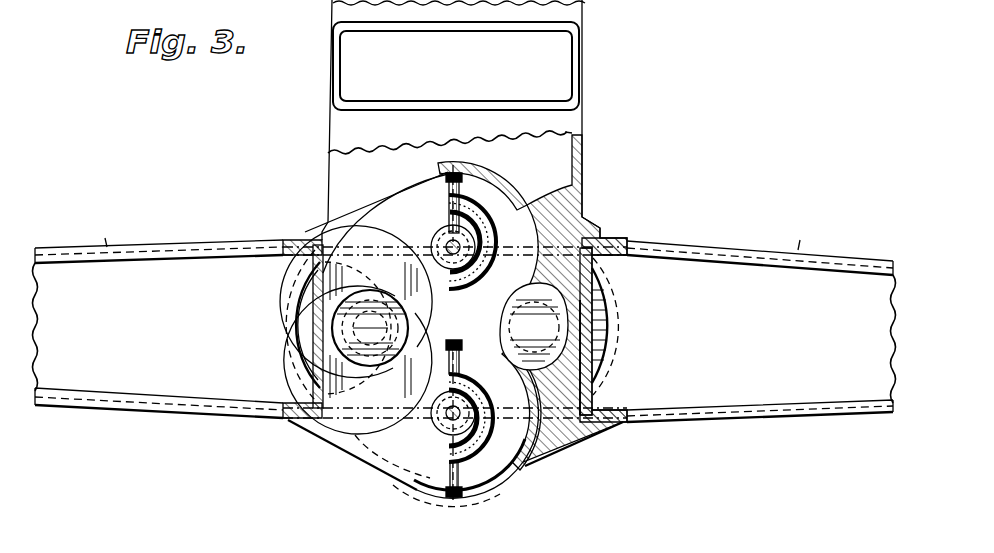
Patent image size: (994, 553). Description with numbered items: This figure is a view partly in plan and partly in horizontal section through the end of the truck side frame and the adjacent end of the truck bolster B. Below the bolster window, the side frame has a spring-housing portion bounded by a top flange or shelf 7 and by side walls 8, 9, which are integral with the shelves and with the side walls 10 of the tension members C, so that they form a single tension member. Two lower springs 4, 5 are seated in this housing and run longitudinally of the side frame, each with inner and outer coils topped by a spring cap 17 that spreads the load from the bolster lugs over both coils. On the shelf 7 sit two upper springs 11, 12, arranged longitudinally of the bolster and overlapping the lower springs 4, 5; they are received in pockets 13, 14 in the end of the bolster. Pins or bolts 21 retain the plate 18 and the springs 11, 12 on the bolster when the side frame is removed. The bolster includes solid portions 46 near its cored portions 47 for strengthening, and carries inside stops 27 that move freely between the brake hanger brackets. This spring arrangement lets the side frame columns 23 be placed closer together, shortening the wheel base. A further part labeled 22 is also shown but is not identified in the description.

The spring 4 is at (293, 325).
The spring 5 is at (613, 328).
The top flange or shelf 7 is at (365, 210).
The side wall 8 is at (428, 418).
The side wall 9 is at (416, 243).
The side wall of tension member 10 is at (464, 341).
The spring 11 is at (527, 452).
The spring 12 is at (417, 316).
The pocket 13 is at (543, 430).
The pocket 14 is at (490, 167).
The spring cap 17 is at (298, 298).
The plate 18 is at (388, 452).
The pin or bolt 21 is at (450, 245).
The arm wall 22 is at (138, 270).
The side frame column 23 is at (318, 357).
The inside stop 27 is at (312, 240).
The solid portion 46 is at (602, 257).
The cored portion 47 is at (600, 391).